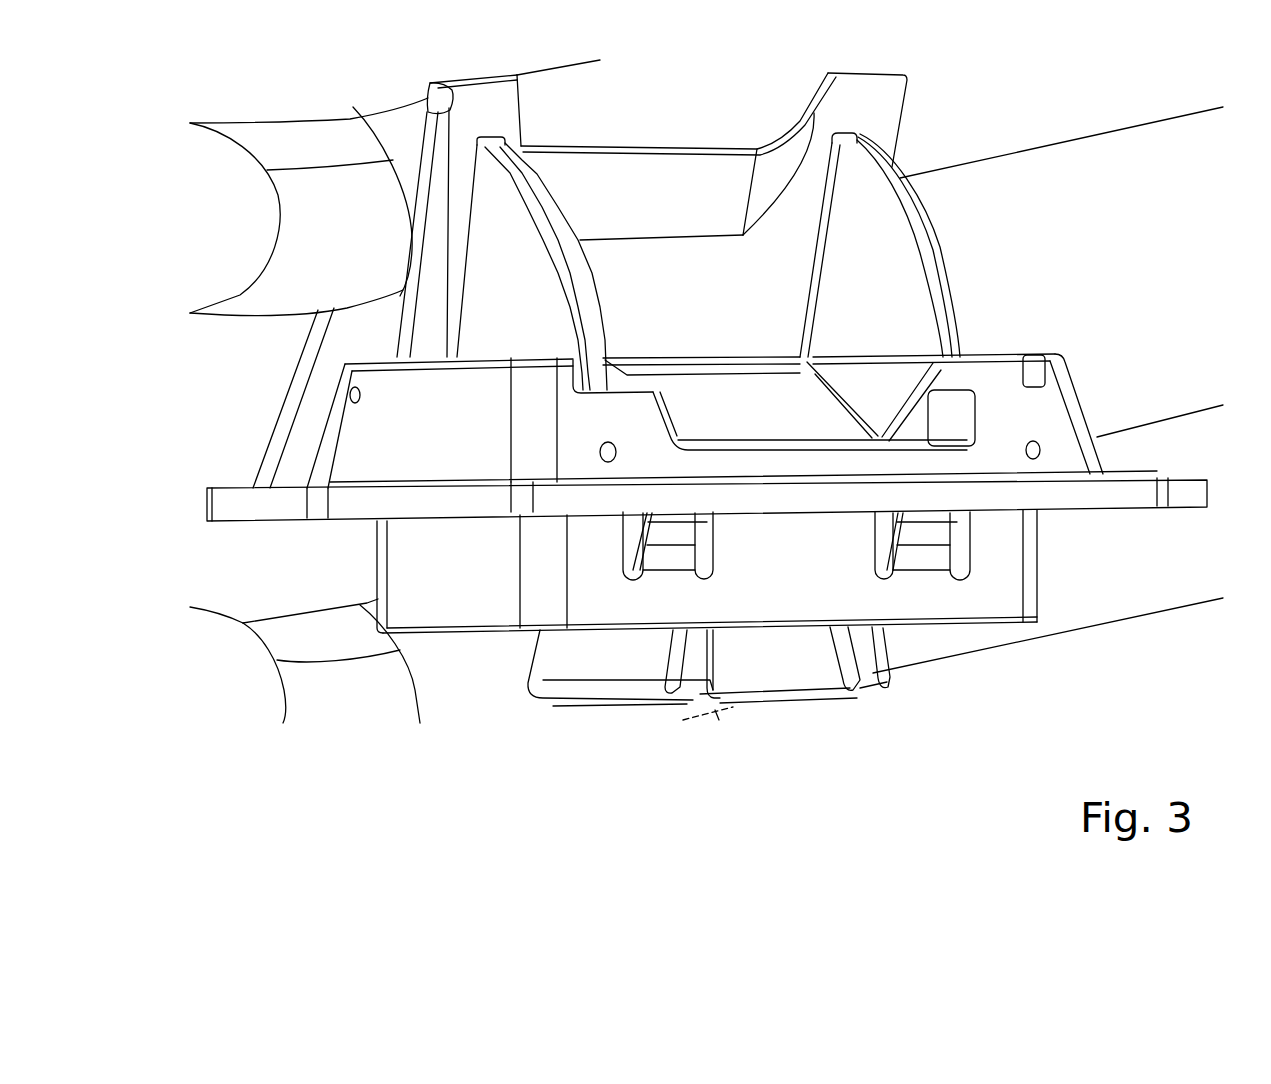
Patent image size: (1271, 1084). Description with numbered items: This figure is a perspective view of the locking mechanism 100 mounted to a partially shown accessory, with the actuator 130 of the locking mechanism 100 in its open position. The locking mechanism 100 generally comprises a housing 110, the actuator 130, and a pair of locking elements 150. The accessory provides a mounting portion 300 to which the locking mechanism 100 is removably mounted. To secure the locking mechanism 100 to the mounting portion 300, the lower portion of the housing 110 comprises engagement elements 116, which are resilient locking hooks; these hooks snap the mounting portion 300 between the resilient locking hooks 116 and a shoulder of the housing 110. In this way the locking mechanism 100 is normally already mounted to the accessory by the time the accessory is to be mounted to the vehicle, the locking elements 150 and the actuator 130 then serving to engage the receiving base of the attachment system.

The locking mechanism 100 is at (1070, 260).
The housing 110 is at (1053, 410).
The engagement elements 116 is at (680, 530).
The actuator 130 is at (882, 100).
The locking elements 150 is at (552, 668).
The mounting portion 300 is at (1127, 493).